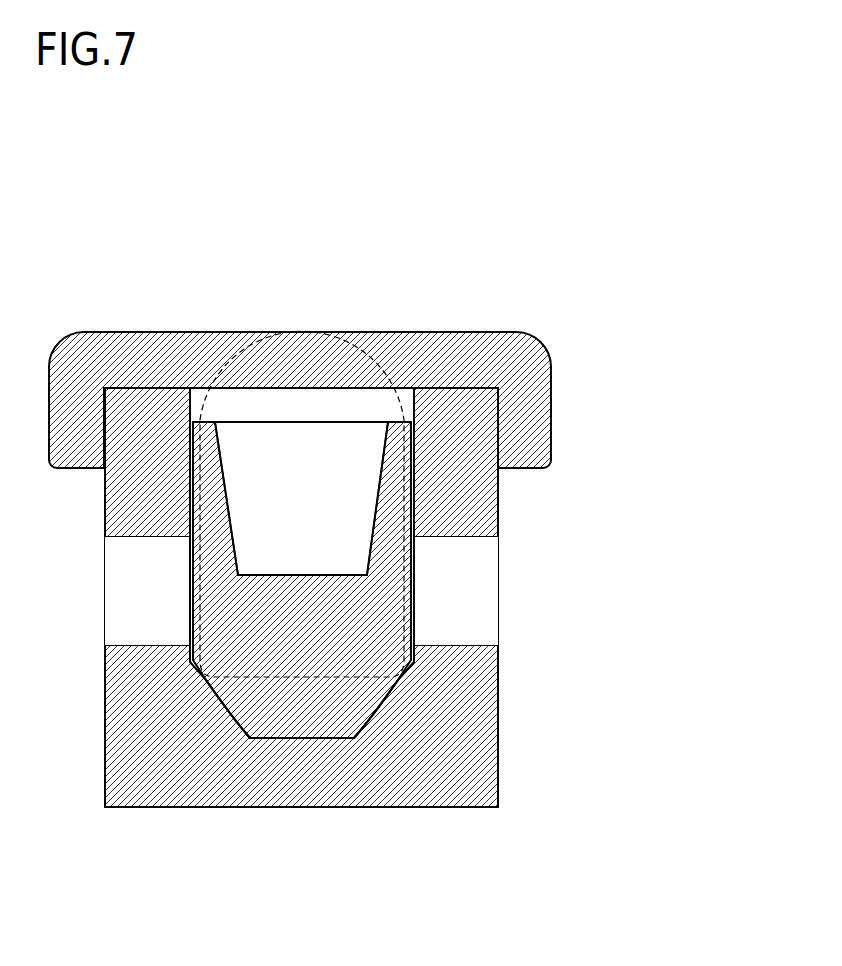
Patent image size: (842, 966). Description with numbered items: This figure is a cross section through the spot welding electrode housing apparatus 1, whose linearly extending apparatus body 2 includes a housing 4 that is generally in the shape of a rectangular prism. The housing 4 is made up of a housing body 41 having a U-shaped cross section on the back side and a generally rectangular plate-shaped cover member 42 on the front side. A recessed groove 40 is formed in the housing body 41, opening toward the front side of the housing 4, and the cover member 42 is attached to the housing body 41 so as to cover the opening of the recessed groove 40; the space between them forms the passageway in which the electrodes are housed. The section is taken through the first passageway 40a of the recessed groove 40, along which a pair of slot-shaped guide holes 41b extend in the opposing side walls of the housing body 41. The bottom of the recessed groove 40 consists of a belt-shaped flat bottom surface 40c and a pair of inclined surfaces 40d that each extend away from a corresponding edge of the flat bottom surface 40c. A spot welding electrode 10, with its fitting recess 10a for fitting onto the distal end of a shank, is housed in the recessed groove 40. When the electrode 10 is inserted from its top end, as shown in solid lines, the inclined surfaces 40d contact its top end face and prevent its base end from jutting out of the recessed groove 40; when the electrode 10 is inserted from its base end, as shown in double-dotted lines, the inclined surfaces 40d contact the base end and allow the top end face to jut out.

The spot welding electrode housing apparatus 1 is at (532, 150).
The apparatus body 2 is at (384, 262).
The housing 4 is at (642, 415).
The spot welding electrode 10 is at (300, 317).
The fitting recess 10a is at (234, 530).
The recessed groove 40 is at (400, 403).
The first passageway 40a is at (263, 407).
The flat bottom surface 40c is at (300, 738).
The inclined surfaces 40d is at (220, 698).
The housing body 41 is at (516, 504).
The guide holes 41b is at (157, 645).
The cover member 42 is at (570, 421).